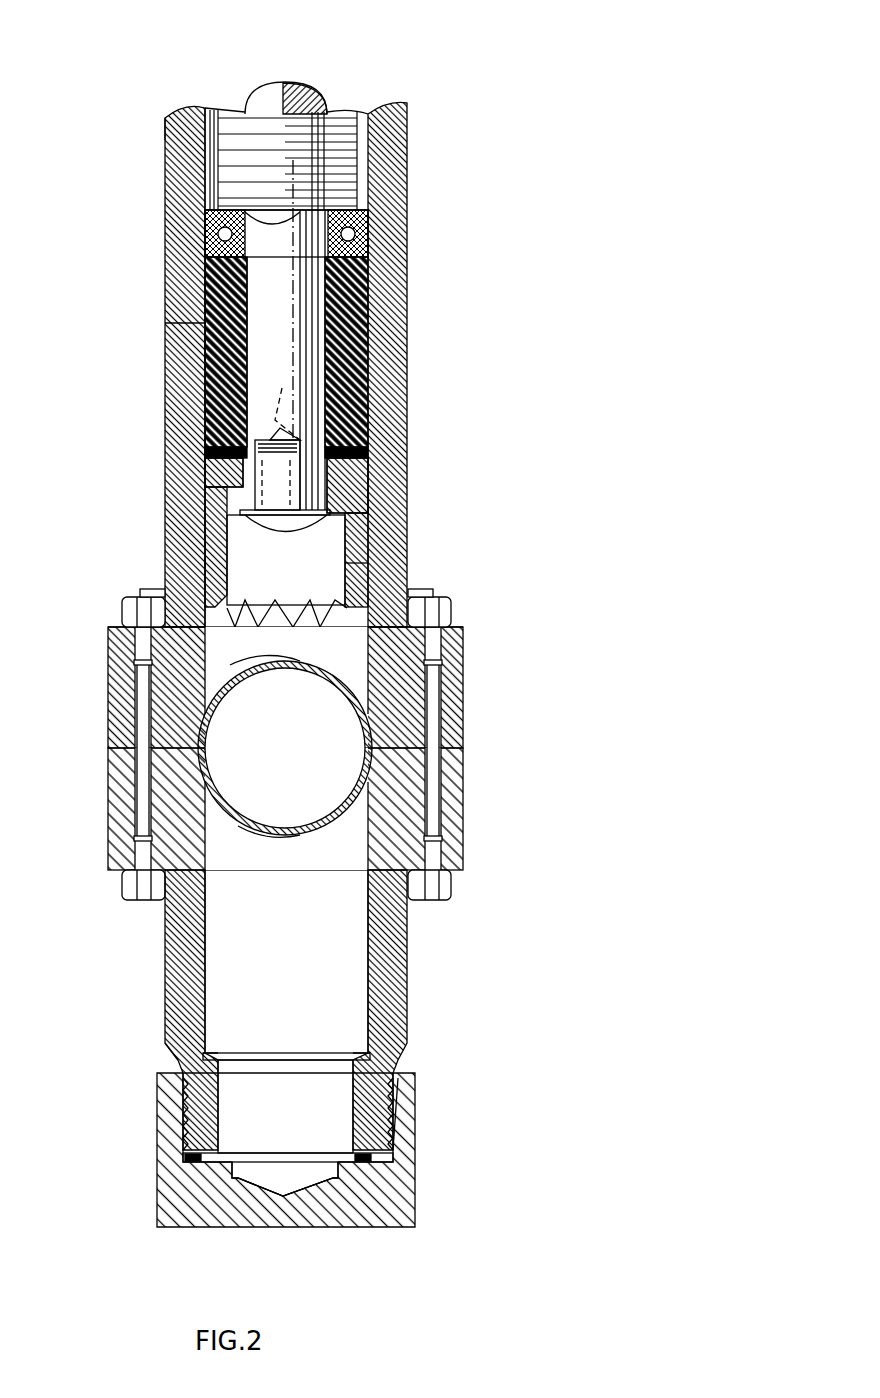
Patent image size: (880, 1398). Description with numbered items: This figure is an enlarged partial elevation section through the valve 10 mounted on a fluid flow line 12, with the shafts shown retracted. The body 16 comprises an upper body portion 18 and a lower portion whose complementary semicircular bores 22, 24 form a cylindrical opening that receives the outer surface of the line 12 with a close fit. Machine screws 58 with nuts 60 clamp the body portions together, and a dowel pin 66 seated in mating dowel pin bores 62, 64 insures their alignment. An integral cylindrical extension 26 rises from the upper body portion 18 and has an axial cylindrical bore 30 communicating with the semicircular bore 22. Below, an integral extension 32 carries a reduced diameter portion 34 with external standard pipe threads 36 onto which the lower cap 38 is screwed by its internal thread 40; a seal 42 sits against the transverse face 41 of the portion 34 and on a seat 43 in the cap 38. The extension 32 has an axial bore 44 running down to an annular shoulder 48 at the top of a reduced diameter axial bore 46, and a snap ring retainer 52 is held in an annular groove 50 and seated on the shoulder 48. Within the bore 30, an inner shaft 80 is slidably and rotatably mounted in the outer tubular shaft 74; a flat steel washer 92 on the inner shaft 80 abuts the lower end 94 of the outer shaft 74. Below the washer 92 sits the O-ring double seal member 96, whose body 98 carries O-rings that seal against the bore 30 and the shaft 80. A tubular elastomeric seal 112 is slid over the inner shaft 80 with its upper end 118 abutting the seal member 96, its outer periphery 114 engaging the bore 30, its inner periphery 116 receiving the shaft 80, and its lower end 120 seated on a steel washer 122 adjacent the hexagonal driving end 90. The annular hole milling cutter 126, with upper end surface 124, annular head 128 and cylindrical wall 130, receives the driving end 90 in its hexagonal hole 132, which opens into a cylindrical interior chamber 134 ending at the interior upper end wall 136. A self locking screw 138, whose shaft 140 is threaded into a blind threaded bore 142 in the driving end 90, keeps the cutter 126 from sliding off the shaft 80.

The valve 10 is at (138, 133).
The fluid flow line 12 is at (280, 834).
The body 16 is at (470, 636).
The upper body portion 18 is at (460, 670).
The semicircular bore 22 is at (238, 672).
The semicircular bore 24 is at (250, 828).
The cylindrical extension 26 is at (185, 372).
The axial cylindrical bore 30 is at (215, 340).
The integral extension 32 is at (398, 965).
The reduced diameter portion 34 is at (392, 1086).
The external standard pipe threads 36 is at (398, 1116).
The lower cap 38 is at (420, 1210).
The internal thread 40 is at (182, 1096).
The transverse face 41 is at (345, 1162).
The seal 42 is at (190, 1158).
The seat 43 is at (232, 1160).
The axial bore 44 is at (372, 1010).
The reduced diameter axial bore 46 is at (180, 1066).
The annular shoulder 48 is at (210, 1055).
The annular groove 50 is at (250, 1060).
The snap ring retainer 52 is at (292, 1052).
The machine screw 58 is at (150, 592).
The machine screw nut 60 is at (140, 606).
The dowel pin bores 62 is at (136, 700).
The dowel pin bores 64 is at (138, 780).
The dowel pin 66 is at (133, 732).
The outer tubular shaft 74 is at (352, 103).
The inner shaft 80 is at (247, 80).
The driving end 90 is at (252, 483).
The flat steel washer 92 is at (370, 208).
The lower end 94 is at (248, 214).
The O-ring double seal member 96 is at (374, 238).
The body 98 is at (208, 211).
The tubular elastomeric seal 112 is at (372, 312).
The outer periphery 114 is at (372, 280).
The inner periphery 116 is at (318, 372).
The upper end 118 is at (218, 240).
The lower end 120 is at (372, 479).
The steel washer 122 is at (372, 455).
The upper end surface 124 is at (200, 432).
The annular hole milling cutter 126 is at (188, 540).
The annular head 128 is at (212, 467).
The cylindrical wall 130 is at (372, 540).
The axially disposed hole 132 is at (262, 520).
The cylindrical interior chamber 134 is at (360, 575).
The interior upper end wall 136 is at (342, 520).
The self locking screw 138 is at (283, 537).
The self locking screw shaft 140 is at (305, 520).
The blind threaded bore 142 is at (274, 300).